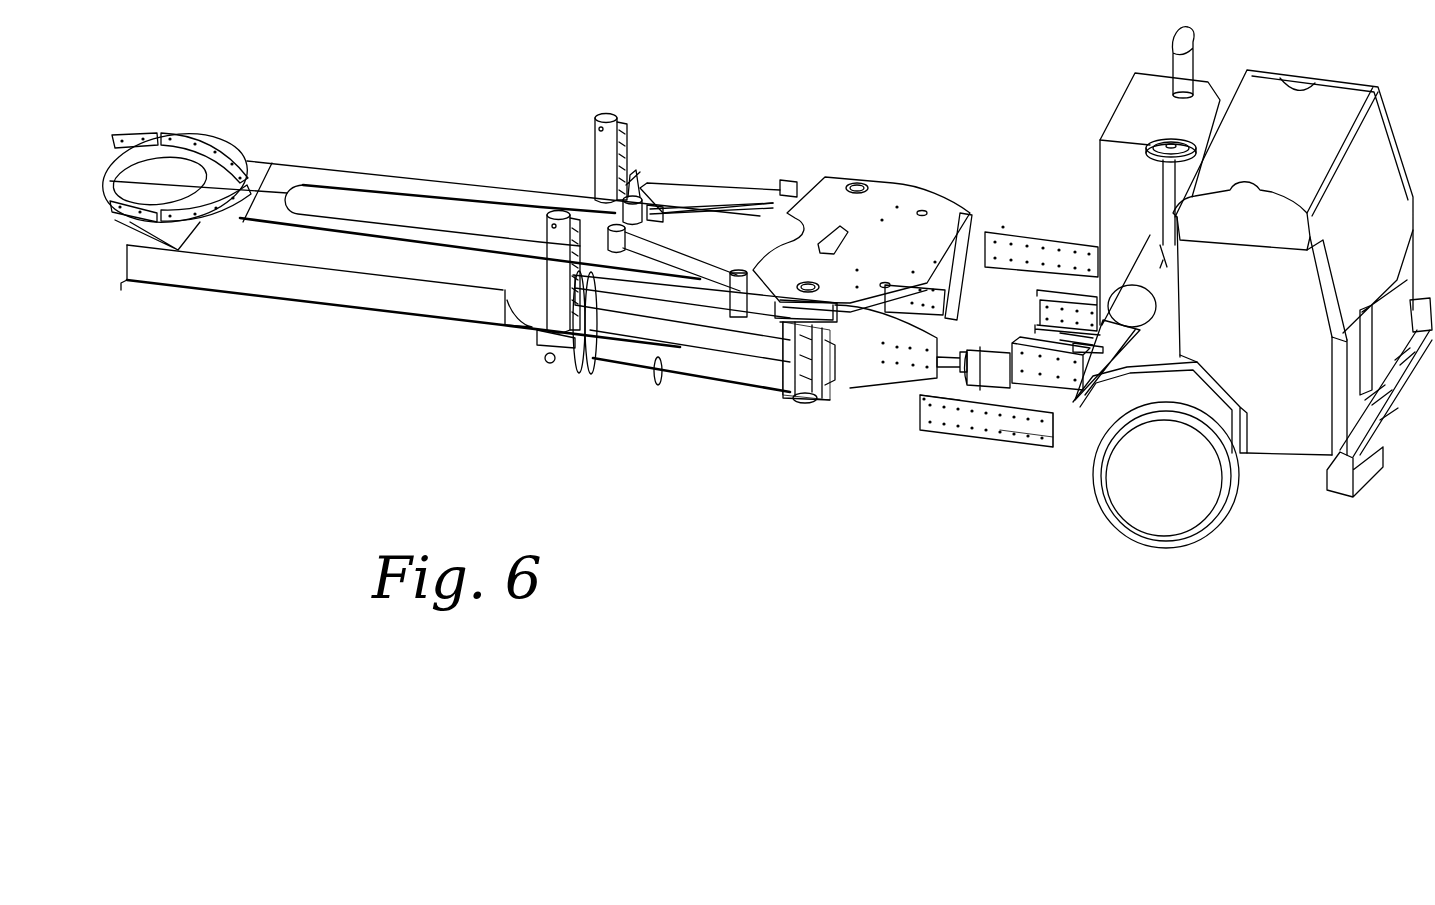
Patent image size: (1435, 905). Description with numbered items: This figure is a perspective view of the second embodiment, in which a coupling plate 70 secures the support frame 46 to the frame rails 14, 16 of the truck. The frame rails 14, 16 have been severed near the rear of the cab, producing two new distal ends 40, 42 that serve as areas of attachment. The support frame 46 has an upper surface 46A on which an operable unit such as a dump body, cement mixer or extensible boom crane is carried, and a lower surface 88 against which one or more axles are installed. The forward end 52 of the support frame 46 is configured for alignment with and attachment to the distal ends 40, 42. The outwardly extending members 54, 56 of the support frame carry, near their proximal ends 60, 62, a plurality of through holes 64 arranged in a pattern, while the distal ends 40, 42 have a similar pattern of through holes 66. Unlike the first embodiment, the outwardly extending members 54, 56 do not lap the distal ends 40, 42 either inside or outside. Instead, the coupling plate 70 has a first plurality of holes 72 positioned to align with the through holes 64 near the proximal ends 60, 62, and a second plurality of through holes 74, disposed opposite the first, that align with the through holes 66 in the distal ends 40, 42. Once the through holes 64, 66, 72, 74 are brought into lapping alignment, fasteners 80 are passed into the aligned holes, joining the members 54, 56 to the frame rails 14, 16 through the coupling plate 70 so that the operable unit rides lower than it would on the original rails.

The frame rail 14 is at (1070, 300).
The frame rail 16 is at (1060, 390).
The distal end 40 is at (1030, 307).
The distal end 42 is at (1010, 356).
The support frame 46 is at (460, 190).
The upper surface 46A is at (284, 175).
The forward end 52 is at (952, 278).
The outwardly extending member 54 is at (950, 297).
The outwardly extending member 56 is at (887, 370).
The proximal end 60 is at (968, 320).
The proximal end 62 is at (925, 378).
The through holes 64 is at (883, 342).
The through holes 66 is at (1062, 365).
The coupling plate 70 is at (982, 440).
The first plurality of holes 72 is at (943, 427).
The second plurality of through holes 74 is at (1010, 433).
The fasteners 80 is at (1000, 228).
The lower surface 88 is at (178, 287).